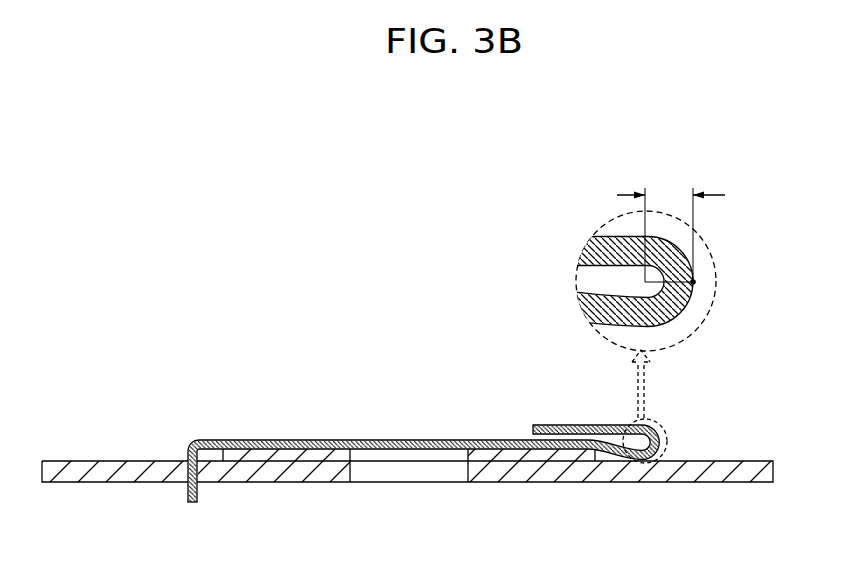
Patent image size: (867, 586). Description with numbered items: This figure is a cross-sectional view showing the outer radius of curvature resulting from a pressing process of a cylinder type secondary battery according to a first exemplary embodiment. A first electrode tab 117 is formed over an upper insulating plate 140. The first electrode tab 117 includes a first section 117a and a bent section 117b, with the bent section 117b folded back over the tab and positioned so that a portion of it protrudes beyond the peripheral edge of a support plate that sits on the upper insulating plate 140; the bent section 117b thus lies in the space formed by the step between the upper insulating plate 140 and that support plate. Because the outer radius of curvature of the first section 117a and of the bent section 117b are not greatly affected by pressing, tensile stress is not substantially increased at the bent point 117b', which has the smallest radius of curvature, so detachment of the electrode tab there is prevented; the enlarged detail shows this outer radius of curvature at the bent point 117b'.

The first electrode tab 117 is at (460, 439).
The first section 117a is at (190, 441).
The bent section 117b is at (631, 416).
The bent point 117b' is at (684, 312).
The upper insulating plate 140 is at (321, 483).